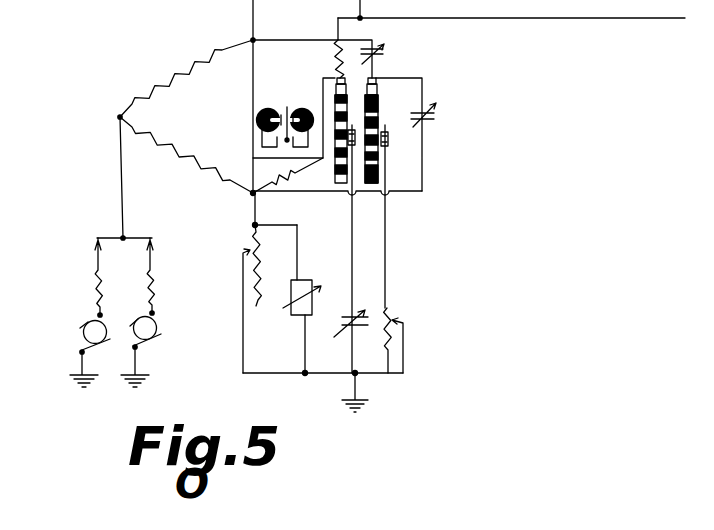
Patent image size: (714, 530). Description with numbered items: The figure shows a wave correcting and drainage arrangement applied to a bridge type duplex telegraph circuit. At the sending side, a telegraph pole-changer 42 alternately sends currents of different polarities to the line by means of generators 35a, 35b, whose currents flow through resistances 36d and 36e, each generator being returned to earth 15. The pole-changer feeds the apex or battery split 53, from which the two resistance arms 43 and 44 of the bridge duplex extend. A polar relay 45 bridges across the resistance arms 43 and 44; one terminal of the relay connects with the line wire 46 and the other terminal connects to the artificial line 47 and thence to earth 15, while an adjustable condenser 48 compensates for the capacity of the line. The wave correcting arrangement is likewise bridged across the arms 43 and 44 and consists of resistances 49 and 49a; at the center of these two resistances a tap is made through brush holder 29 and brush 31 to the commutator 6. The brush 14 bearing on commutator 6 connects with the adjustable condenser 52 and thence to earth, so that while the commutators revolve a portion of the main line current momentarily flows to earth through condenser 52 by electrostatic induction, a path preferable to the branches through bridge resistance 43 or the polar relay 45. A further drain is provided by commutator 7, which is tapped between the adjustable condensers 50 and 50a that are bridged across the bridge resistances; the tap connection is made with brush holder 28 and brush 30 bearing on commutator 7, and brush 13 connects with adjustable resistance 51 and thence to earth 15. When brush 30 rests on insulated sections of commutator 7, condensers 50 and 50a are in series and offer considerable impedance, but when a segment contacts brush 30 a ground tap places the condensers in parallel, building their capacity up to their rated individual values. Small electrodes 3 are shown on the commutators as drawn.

The line wire 46 is at (511, 11).
The resistance 49 is at (334, 57).
The adjustable condenser 50 is at (386, 48).
The adjustable condenser 50a is at (438, 111).
The polar relay 45 is at (262, 108).
The resistance 49a is at (288, 176).
The commutator 6 is at (348, 110).
The commutator 7 is at (379, 98).
The brush 31 is at (343, 79).
The brush holder 29 is at (347, 88).
The brush 30 is at (374, 79).
The brush holder 28 is at (378, 88).
The brush 14 is at (354, 130).
The electrode 3 is at (354, 148).
The brush 13 is at (385, 137).
The apex or battery split 53 is at (118, 117).
The resistance arm 43 is at (190, 85).
The resistance arm 44 is at (172, 150).
The telegraph pole-changer 42 is at (126, 236).
The resistance 36d is at (95, 285).
The resistance 36e is at (160, 292).
The generator 35a is at (84, 326).
The generator 35b is at (160, 328).
The earth 15 is at (78, 382).
The artificial line 47 is at (246, 250).
The adjustable condenser 48 is at (300, 281).
The adjustable condenser 52 is at (346, 334).
The adjustable resistance 51 is at (390, 318).